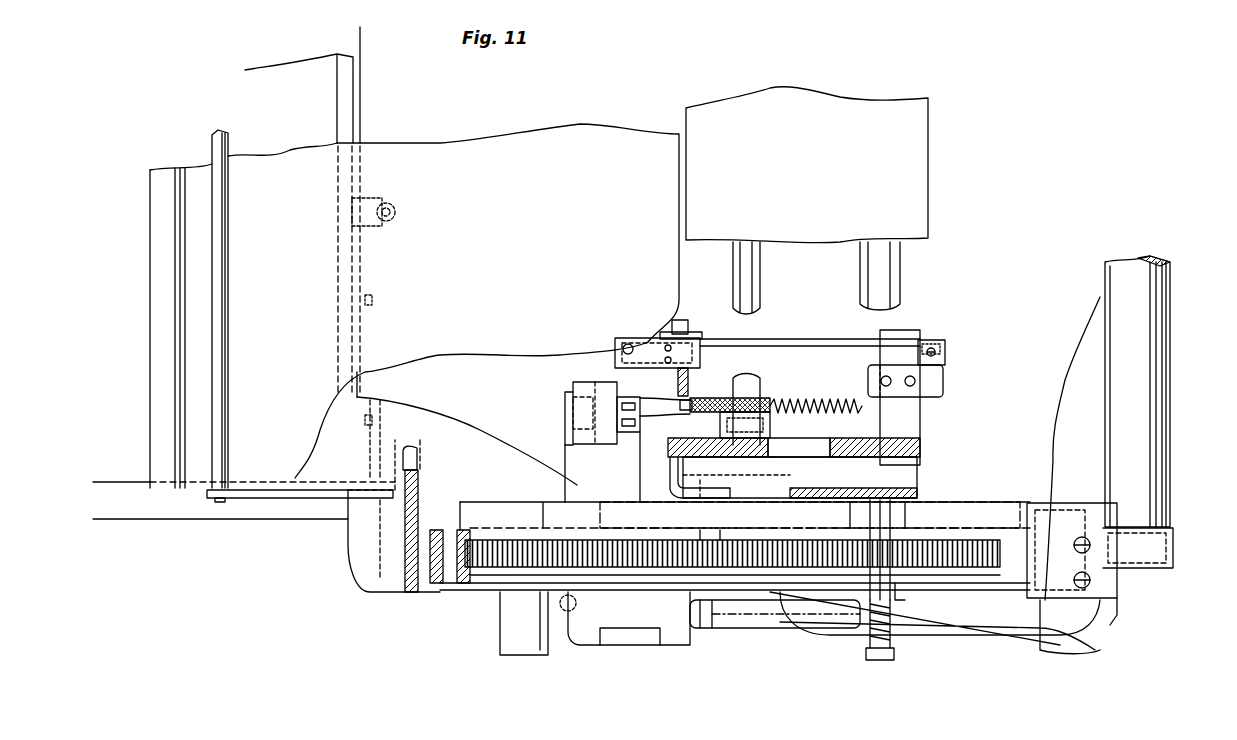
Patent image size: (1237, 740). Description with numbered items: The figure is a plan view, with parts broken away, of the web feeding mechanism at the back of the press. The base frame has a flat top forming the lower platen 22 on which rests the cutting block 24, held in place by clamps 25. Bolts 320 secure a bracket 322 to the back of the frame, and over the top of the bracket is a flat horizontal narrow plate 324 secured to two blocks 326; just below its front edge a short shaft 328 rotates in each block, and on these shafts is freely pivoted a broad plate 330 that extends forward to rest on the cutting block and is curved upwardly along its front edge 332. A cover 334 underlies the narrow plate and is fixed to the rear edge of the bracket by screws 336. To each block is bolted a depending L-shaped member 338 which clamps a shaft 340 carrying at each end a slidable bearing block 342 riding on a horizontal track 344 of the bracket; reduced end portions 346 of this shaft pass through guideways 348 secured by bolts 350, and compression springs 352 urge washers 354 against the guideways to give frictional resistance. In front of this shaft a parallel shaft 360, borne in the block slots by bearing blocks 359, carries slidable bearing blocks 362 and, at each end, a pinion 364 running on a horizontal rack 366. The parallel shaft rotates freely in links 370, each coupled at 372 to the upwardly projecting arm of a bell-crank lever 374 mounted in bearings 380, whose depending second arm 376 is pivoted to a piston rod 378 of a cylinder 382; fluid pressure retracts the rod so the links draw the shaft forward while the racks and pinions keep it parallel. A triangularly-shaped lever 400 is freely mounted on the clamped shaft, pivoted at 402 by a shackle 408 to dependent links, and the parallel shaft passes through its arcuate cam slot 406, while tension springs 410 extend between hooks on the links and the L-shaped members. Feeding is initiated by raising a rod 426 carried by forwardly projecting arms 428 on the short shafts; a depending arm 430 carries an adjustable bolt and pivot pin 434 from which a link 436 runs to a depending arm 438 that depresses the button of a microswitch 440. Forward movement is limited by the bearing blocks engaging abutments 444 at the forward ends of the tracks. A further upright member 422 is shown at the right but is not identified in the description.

The lower platen 22 is at (352, 43).
The cutting block 24 is at (292, 124).
The clamps 25 is at (396, 208).
The bolts 320 is at (388, 415).
The bracket 322 is at (356, 527).
The flat horizontal narrow plate 324 is at (810, 172).
The blocks 326 is at (816, 448).
The short shaft 328 is at (689, 381).
The broad plate 330 is at (522, 272).
The front edge 332 is at (155, 286).
The cover 334 is at (1082, 380).
The screws 336 is at (1090, 588).
The L-shaped member 338 is at (921, 424).
The shaft 340 is at (900, 278).
The slidable bearing block 342 is at (906, 513).
The horizontal track 344 is at (940, 506).
The reduced end portions 346 is at (866, 650).
The guideways 348 is at (496, 588).
The bolts 350 is at (444, 590).
The compression springs 352 is at (892, 626).
The washers 354 is at (900, 602).
The bearing blocks 359 is at (772, 452).
The parallel shaft 360 is at (760, 292).
The slidable bearing blocks 362 is at (770, 513).
The pinion 364 is at (722, 542).
The horizontal rack 366 is at (612, 542).
The links 370 is at (657, 398).
The coupling 372 is at (600, 386).
The bell-crank lever 374 is at (565, 414).
The depending second arm 376 is at (626, 628).
The piston rod 378 is at (568, 402).
The bearings 380 is at (572, 458).
The cylinder 382 is at (952, 628).
The triangularly-shaped lever 400 is at (818, 490).
The pivot 402 is at (696, 446).
The arcuate cam slot 406 is at (788, 490).
The shackle 408 is at (668, 480).
The tension springs 410 is at (808, 402).
The upright bar 422 is at (1171, 330).
The rod 426 is at (229, 270).
The forwardly projecting arms 428 is at (243, 497).
The arm 430 is at (700, 336).
The adjustable bolt and pivot pin 434 is at (700, 358).
The link 436 is at (800, 345).
The depending arm 438 is at (946, 350).
The microswitch 440 is at (928, 345).
The abutments 444 is at (548, 502).